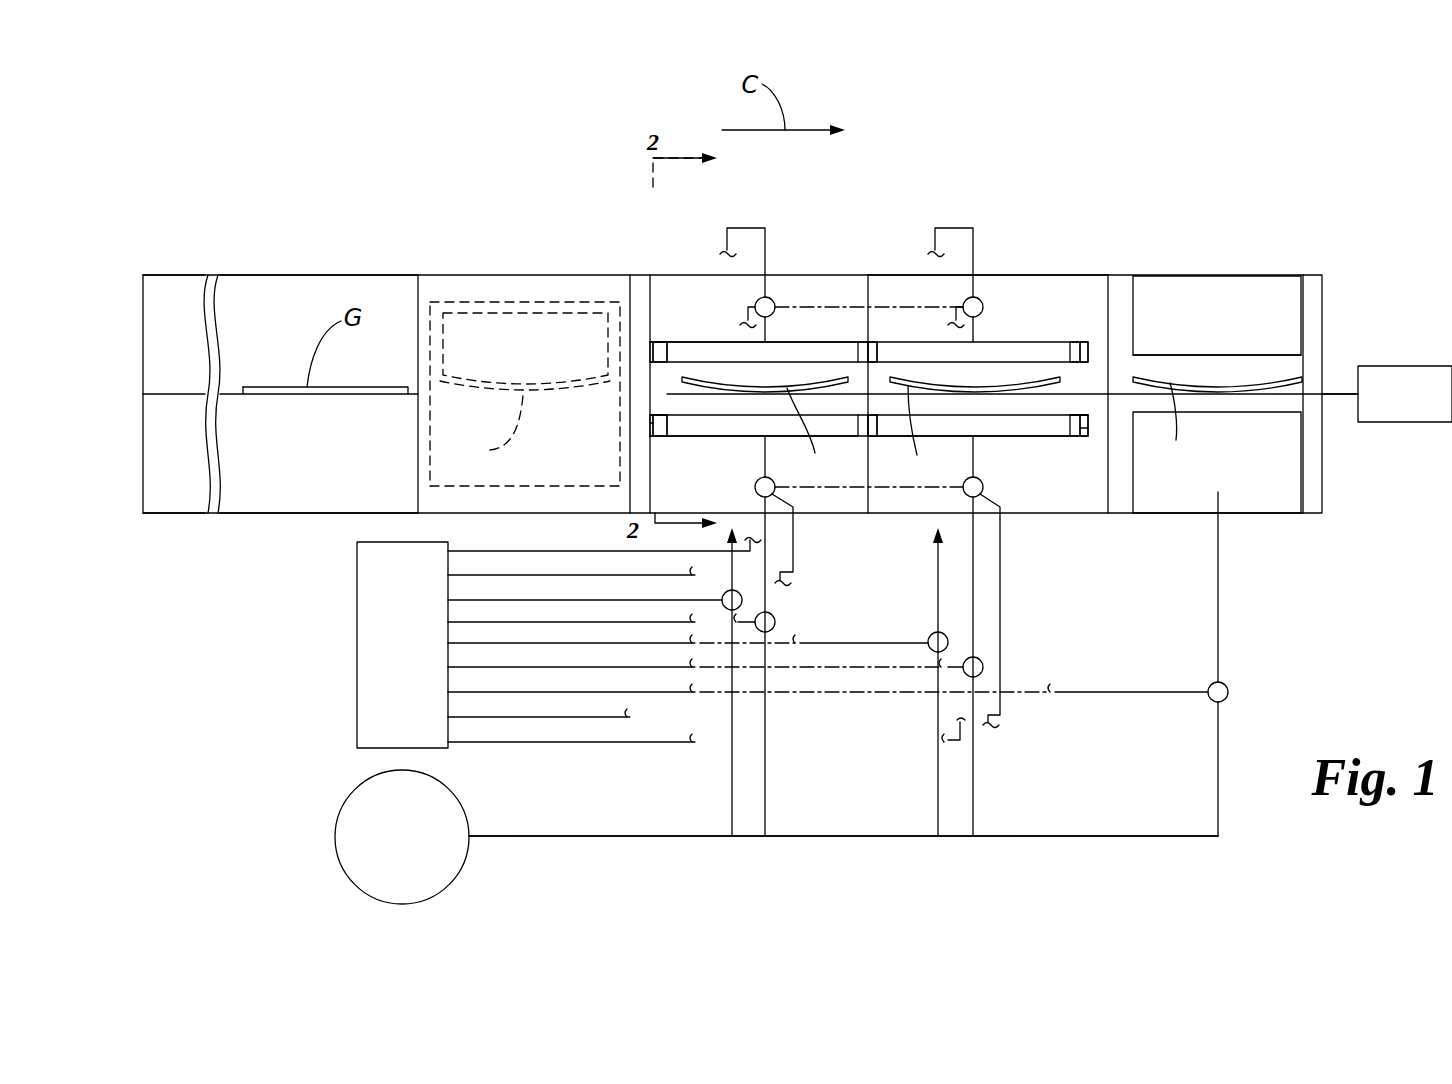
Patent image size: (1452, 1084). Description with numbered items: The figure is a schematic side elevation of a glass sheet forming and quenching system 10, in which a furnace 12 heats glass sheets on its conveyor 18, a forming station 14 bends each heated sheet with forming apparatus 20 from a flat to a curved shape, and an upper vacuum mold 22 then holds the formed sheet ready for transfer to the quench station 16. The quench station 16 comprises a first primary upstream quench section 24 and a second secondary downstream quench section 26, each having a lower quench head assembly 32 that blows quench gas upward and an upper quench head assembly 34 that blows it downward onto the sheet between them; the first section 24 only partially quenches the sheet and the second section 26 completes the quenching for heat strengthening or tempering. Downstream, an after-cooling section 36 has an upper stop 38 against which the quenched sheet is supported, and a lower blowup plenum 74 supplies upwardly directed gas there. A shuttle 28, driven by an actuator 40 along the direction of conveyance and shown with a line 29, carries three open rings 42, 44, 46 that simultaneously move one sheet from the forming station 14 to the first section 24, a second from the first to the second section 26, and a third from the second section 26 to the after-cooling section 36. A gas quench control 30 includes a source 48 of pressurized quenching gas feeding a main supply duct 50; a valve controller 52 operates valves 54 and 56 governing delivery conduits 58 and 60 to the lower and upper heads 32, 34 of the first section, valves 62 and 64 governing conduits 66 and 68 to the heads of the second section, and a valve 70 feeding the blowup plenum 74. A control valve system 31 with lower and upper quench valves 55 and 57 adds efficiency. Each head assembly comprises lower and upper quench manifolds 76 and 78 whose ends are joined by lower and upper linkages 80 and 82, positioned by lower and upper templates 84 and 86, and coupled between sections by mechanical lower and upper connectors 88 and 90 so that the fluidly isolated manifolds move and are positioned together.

The glass sheet forming and quenching system 10 is at (893, 186).
The furnace 12 is at (235, 268).
The forming station 14 is at (525, 228).
The quench station 16 is at (1032, 250).
The conveyor 18 is at (176, 392).
The forming apparatus 20 is at (506, 298).
The upper vacuum mold 22 is at (540, 337).
The first primary upstream quench section 24 is at (812, 270).
The second secondary downstream quench section 26 is at (1055, 270).
The shuttle 28 is at (1349, 352).
The conveyor line 29 is at (1335, 397).
The gas quench control 30 is at (309, 763).
The control valve system 31 is at (903, 298).
The lower quench head assembly 32 is at (712, 426).
The upper quench head assembly 34 is at (806, 352).
The after-cooling section 36 is at (1229, 295).
The upper stop 38 is at (1198, 365).
The actuator 40 is at (1413, 415).
The open ring 42 is at (698, 388).
The open ring 44 is at (938, 388).
The open ring 46 is at (1270, 388).
The source of pressurized quenching gas 48 is at (430, 878).
The main supply duct 50 is at (822, 837).
The valve controller 52 is at (341, 647).
The valve 54 is at (775, 622).
The lower quench valve 55 is at (771, 482).
The valve 56 is at (742, 600).
The upper quench valve 57 is at (771, 300).
The delivery conduit 58 is at (765, 812).
The delivery conduit 60 is at (732, 775).
The valve 62 is at (983, 664).
The valve 64 is at (948, 640).
The conduit 66 is at (973, 802).
The conduit 68 is at (938, 758).
The valve 70 is at (1228, 690).
The lower blowup plenum 74 is at (1293, 458).
The lower quench manifold 76 is at (833, 427).
The upper quench manifold 78 is at (717, 348).
The lower linkage 80 is at (662, 437).
The upper linkage 82 is at (655, 348).
The lower template 84 is at (648, 423).
The upper template 86 is at (630, 345).
The lower connector 88 is at (873, 437).
The upper connector 90 is at (877, 342).